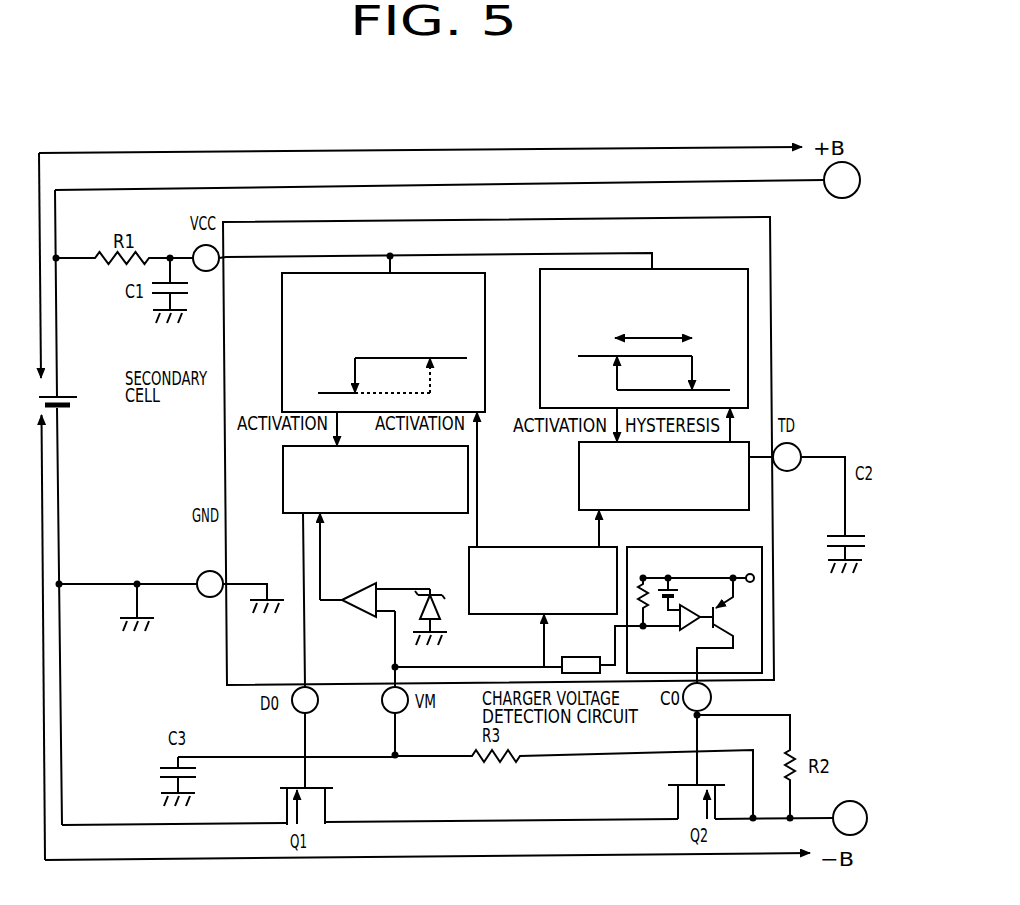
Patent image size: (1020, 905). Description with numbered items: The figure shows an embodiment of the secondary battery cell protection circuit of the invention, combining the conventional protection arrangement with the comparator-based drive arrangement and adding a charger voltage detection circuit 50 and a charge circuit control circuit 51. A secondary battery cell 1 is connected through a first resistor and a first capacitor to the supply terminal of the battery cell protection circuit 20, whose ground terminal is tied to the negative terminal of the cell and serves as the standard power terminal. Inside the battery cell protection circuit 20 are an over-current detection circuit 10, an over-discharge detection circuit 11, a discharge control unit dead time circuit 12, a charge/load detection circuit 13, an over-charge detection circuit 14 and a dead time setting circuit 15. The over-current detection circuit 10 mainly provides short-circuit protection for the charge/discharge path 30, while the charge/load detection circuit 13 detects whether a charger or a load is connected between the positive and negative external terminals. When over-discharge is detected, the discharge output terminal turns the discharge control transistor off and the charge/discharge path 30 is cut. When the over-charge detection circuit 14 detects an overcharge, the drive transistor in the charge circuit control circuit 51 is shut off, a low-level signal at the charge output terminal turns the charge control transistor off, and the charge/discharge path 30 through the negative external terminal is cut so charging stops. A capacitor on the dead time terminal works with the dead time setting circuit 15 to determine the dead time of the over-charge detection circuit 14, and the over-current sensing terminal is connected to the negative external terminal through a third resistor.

The secondary battery cell 1 is at (70, 396).
The over-current detection circuit 10 is at (356, 610).
The over-discharge detection circuit 11 is at (450, 272).
The discharge control unit dead time circuit 12 is at (283, 474).
The charge/load detection circuit 13 is at (497, 615).
The over-charge detection circuit 14 is at (705, 268).
The dead time setting circuit 15 is at (579, 472).
The battery cell protection circuit 20 is at (772, 312).
The charge/discharge path 30 is at (430, 152).
The charger voltage detection circuit 50 is at (595, 657).
The charge circuit control circuit 51 is at (766, 628).